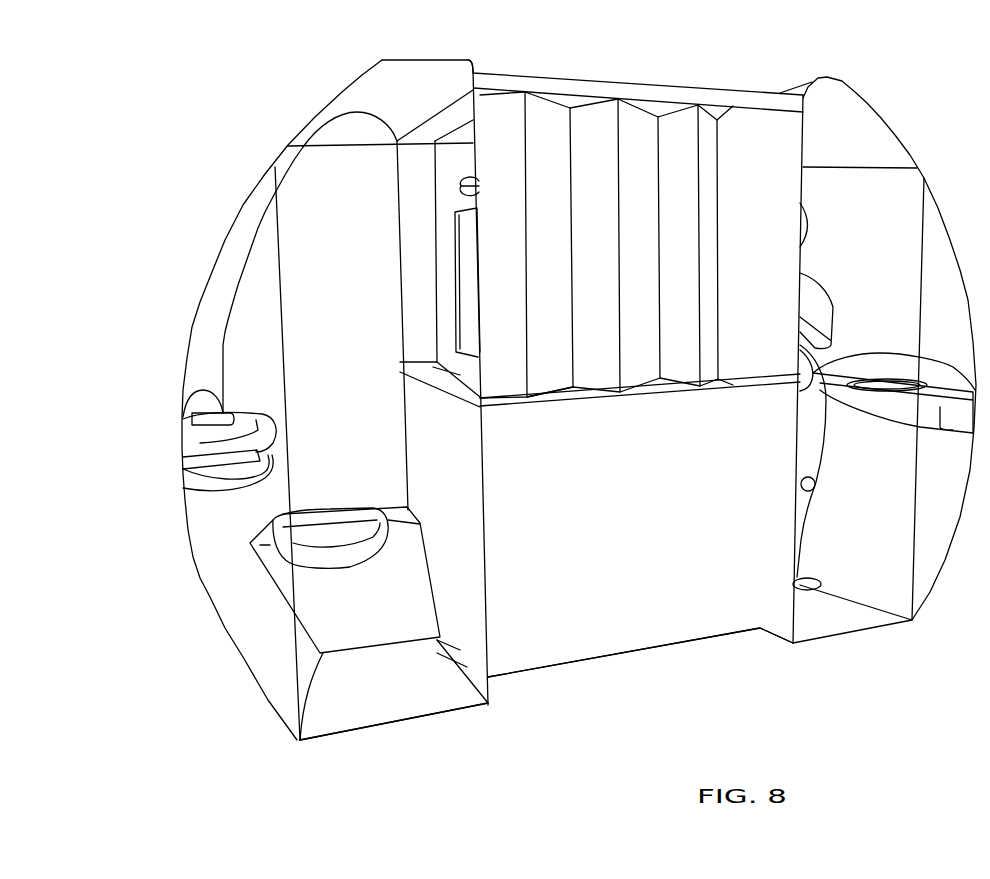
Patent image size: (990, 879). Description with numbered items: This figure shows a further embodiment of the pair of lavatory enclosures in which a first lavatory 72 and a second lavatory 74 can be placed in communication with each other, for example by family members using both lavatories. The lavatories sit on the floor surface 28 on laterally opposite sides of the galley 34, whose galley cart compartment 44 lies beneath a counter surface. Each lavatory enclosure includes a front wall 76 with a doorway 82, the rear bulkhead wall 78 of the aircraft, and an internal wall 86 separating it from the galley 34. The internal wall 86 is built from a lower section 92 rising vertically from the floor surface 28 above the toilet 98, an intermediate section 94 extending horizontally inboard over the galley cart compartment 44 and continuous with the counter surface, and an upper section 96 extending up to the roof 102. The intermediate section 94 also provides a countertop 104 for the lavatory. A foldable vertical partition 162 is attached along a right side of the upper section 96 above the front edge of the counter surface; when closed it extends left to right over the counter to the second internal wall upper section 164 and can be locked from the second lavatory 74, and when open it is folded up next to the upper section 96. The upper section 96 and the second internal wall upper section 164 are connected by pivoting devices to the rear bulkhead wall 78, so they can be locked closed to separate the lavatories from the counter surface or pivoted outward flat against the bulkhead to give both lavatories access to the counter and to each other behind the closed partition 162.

The floor surface 28 is at (437, 707).
The galley 34 is at (600, 120).
The galley cart compartment 44 is at (760, 657).
The first lavatory 72 is at (312, 190).
The second lavatory 74 is at (898, 213).
The front wall 76 is at (243, 328).
The rear bulkhead wall 78 is at (340, 168).
The doorway 82 is at (275, 230).
The internal wall 86 is at (470, 667).
The lower section 92 is at (460, 650).
The intermediate section 94 is at (437, 367).
The upper section 96 is at (448, 322).
The toilet 98 is at (320, 533).
The roof 102 is at (423, 78).
The countertop 104 is at (440, 370).
The foldable vertical partition 162 is at (540, 108).
The second internal wall upper section 164 is at (748, 125).